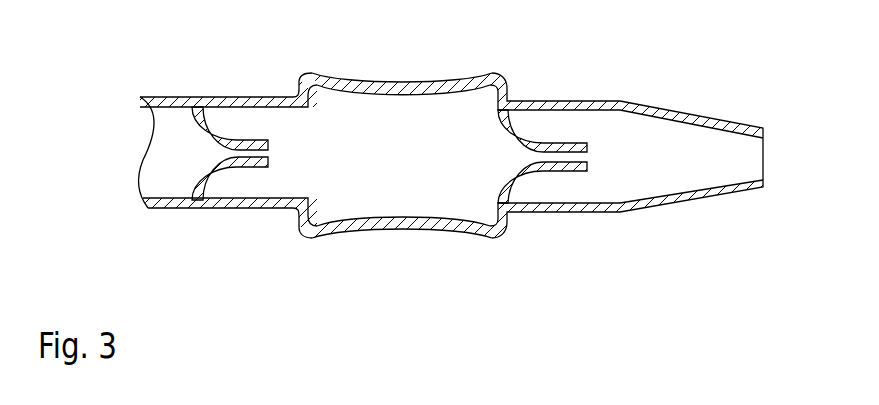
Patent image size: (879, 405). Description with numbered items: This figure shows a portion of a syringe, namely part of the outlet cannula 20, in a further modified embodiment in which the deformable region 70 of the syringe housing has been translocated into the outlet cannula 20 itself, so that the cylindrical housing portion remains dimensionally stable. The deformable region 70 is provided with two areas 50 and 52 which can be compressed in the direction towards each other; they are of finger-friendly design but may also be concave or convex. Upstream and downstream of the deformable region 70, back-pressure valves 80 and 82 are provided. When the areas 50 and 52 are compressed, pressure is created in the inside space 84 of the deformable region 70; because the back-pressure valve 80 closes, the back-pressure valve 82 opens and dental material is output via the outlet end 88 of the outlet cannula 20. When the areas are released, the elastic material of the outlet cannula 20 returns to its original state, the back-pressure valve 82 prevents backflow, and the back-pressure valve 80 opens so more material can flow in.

The outlet cannula 20 is at (651, 113).
The compressible area 50 is at (401, 72).
The compressible area 52 is at (334, 245).
The deformable region 70 is at (400, 240).
The back-pressure valve 80 is at (212, 176).
The back-pressure valve 82 is at (512, 183).
The inside space 84 is at (392, 169).
The outlet end 88 is at (766, 153).